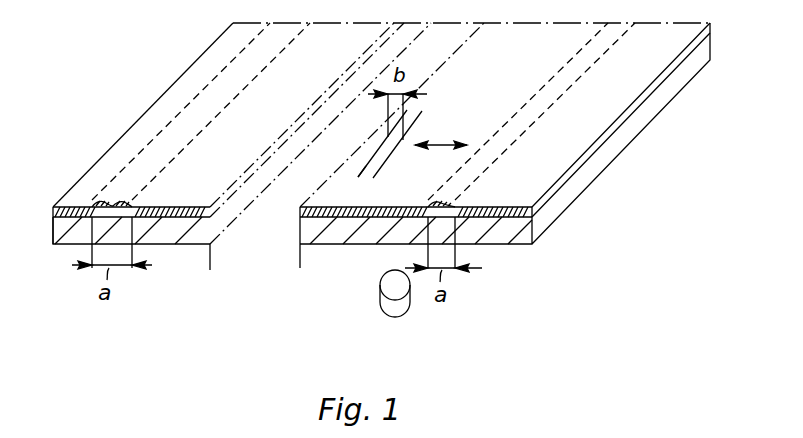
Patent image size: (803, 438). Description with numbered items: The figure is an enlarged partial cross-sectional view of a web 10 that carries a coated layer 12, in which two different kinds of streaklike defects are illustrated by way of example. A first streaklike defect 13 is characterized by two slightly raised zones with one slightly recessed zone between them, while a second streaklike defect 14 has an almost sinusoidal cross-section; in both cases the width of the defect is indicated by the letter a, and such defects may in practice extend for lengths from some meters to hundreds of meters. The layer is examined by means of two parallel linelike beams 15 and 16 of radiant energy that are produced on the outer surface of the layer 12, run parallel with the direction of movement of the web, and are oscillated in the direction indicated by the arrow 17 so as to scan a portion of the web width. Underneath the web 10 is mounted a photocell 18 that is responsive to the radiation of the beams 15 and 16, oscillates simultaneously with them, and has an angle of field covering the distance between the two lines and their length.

The web 10 is at (505, 240).
The coated layer 12 is at (560, 179).
The first streaklike defect 13 is at (112, 205).
The second streaklike defect 14 is at (435, 206).
The linelike beam 15 is at (376, 170).
The linelike beam 16 is at (372, 168).
The arrow 17 is at (445, 145).
The photocell 18 is at (381, 300).